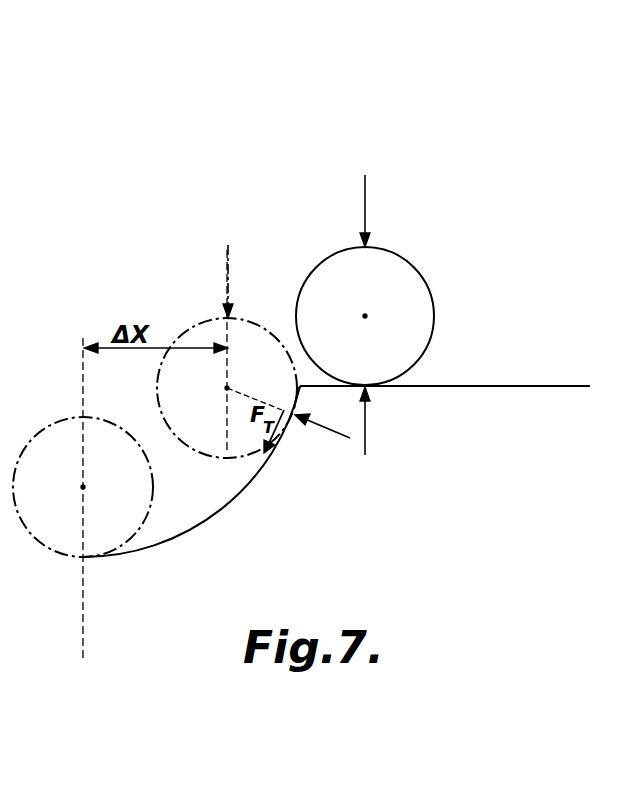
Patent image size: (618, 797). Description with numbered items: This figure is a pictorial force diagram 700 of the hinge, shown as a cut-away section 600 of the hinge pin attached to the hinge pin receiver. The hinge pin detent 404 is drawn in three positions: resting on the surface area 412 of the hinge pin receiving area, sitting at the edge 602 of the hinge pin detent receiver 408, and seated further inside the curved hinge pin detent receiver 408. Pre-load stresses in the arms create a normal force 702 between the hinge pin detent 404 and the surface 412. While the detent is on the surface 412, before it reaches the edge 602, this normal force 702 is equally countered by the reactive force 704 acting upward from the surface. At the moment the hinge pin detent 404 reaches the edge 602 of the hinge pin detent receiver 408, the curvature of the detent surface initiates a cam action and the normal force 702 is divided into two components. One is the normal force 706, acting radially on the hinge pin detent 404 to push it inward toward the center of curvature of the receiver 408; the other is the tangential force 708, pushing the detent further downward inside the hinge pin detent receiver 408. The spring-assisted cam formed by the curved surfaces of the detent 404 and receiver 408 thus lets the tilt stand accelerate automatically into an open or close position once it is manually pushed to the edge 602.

The cut-away section 600 is at (0, 38).
The force diagram 700 is at (285, 84).
The normal force 702 is at (232, 208).
The hinge pin detent 404 is at (407, 256).
The surface area 412 is at (498, 386).
The hinge pin detent receiver 408 is at (222, 508).
The edge 602 is at (305, 392).
The tangential force 708 is at (250, 430).
The normal force 706 is at (318, 465).
The reactive force 704 is at (362, 490).